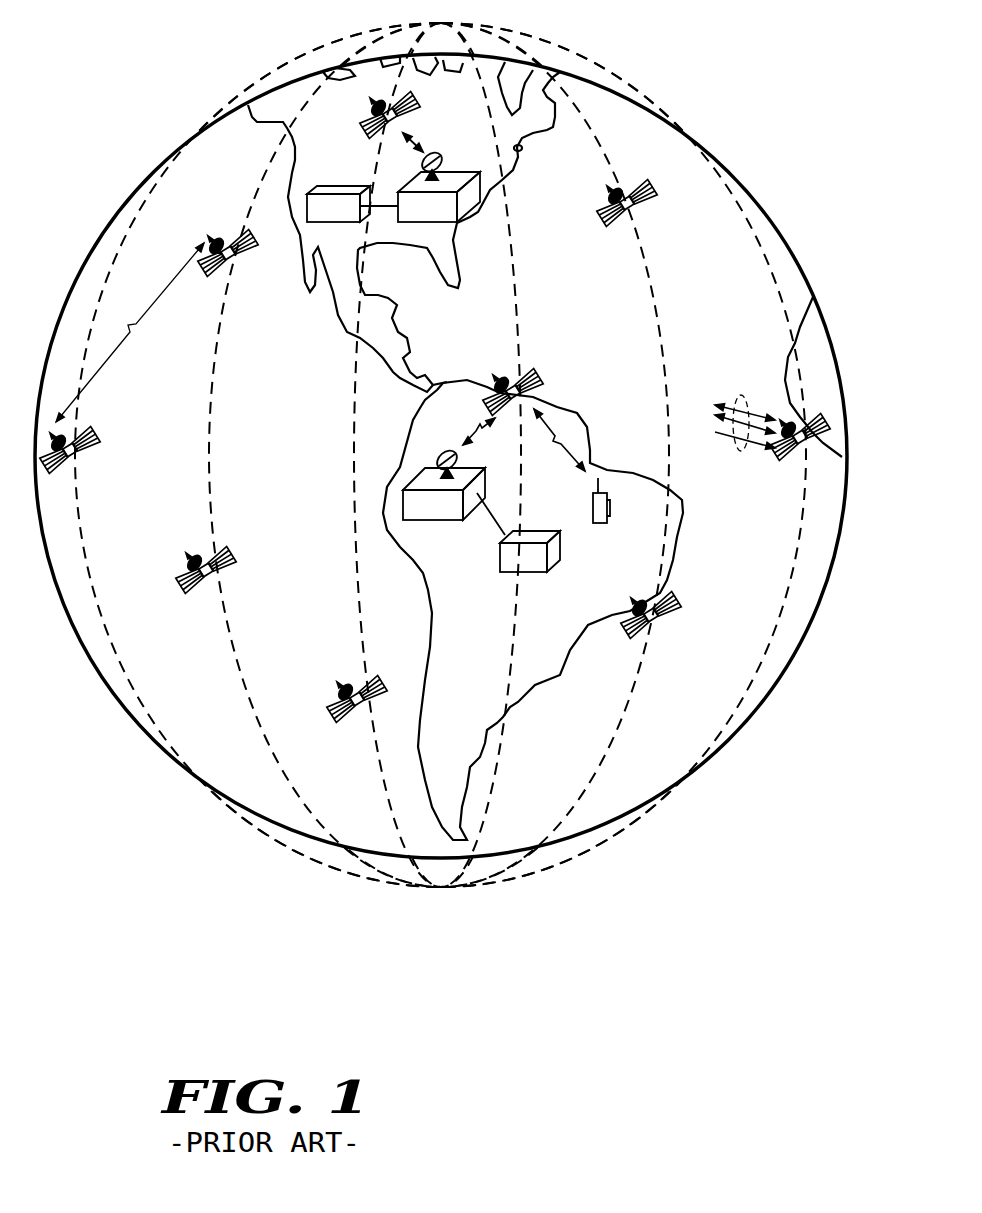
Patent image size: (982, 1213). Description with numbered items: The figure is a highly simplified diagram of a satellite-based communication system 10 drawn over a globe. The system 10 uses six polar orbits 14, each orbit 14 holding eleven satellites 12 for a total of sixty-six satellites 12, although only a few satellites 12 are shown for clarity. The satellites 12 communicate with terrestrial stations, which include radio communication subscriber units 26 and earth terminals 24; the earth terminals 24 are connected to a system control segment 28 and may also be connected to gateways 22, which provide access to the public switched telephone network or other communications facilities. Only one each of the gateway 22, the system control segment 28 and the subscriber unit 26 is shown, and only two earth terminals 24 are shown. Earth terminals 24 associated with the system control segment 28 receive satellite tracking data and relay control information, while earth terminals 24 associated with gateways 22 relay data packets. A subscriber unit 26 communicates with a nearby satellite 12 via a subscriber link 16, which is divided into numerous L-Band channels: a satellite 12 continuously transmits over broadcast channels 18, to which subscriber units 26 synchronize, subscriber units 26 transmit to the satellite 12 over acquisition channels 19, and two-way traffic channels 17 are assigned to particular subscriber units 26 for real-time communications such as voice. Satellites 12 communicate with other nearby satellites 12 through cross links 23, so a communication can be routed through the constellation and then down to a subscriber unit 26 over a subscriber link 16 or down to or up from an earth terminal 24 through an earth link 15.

The communication system 10 is at (430, 980).
The satellite 12 is at (372, 143).
The polar orbit 14 is at (264, 183).
The earth link 15 is at (476, 428).
The subscriber link 16 is at (537, 407).
The traffic channel 17 is at (737, 400).
The broadcast channel 18 is at (716, 416).
The acquisition channel 19 is at (733, 440).
The gateway 22 is at (535, 573).
The cross link 23 is at (142, 322).
The earth terminal 24 is at (461, 168).
The subscriber unit 26 is at (602, 524).
The system control segment 28 is at (320, 223).